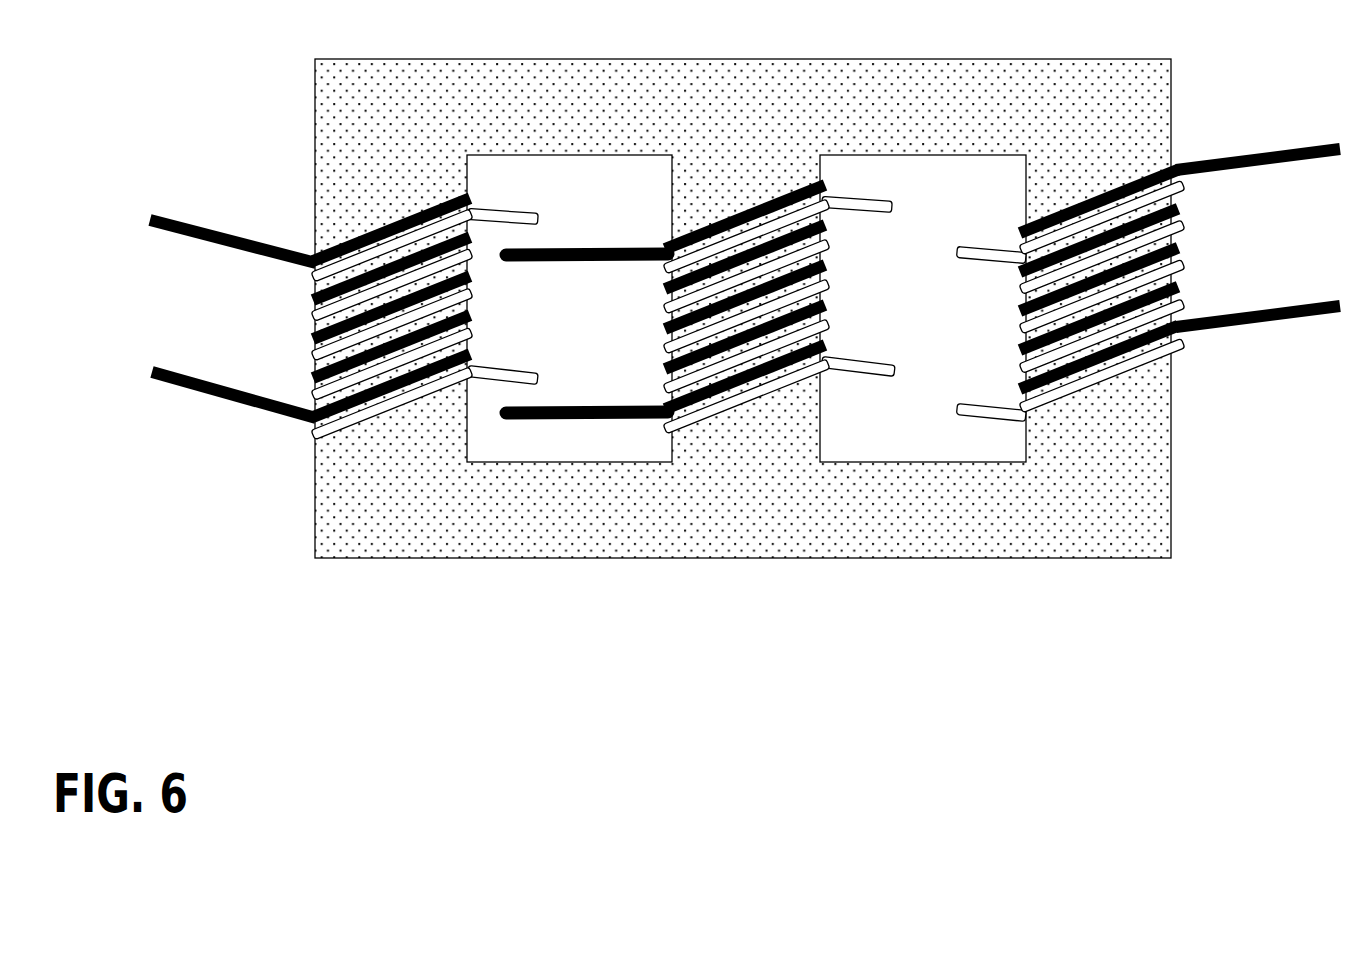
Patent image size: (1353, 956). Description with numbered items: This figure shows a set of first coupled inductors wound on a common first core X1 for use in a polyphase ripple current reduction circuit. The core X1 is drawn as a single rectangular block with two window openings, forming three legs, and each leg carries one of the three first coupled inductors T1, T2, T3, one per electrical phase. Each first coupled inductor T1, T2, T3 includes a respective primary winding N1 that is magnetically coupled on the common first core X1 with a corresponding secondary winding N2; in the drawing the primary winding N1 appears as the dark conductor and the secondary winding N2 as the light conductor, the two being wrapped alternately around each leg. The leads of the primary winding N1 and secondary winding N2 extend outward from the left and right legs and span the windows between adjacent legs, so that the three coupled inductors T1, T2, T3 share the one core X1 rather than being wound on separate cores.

The common first core X1 is at (335, 138).
The first coupled inductor T1 is at (425, 181).
The first coupled inductor T2 is at (715, 186).
The first coupled inductor T3 is at (1100, 171).
The primary winding N1 is at (745, 261).
The secondary winding N2 is at (313, 318).